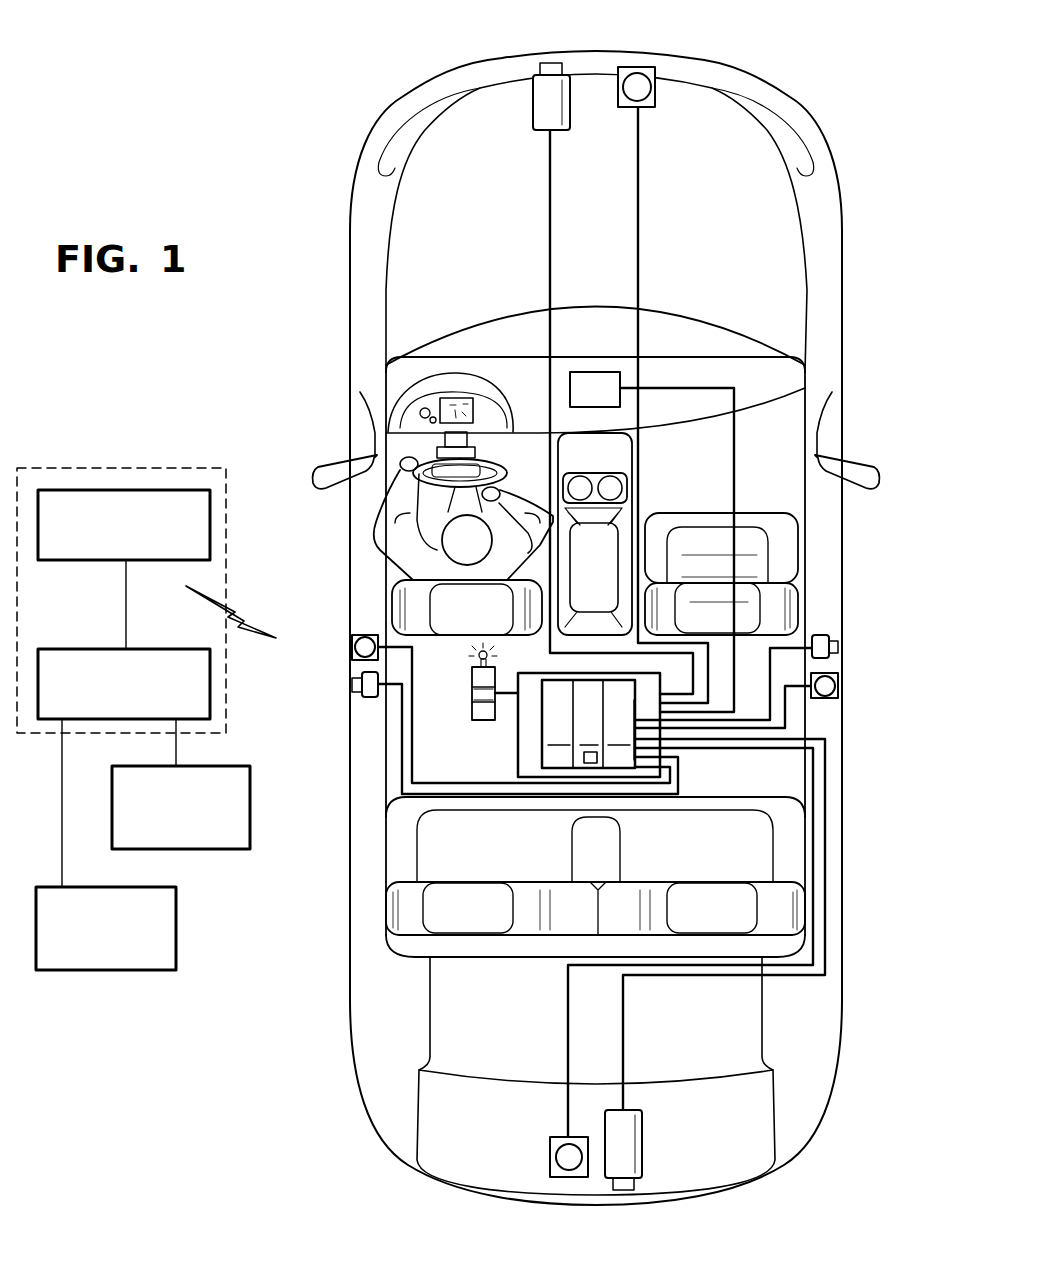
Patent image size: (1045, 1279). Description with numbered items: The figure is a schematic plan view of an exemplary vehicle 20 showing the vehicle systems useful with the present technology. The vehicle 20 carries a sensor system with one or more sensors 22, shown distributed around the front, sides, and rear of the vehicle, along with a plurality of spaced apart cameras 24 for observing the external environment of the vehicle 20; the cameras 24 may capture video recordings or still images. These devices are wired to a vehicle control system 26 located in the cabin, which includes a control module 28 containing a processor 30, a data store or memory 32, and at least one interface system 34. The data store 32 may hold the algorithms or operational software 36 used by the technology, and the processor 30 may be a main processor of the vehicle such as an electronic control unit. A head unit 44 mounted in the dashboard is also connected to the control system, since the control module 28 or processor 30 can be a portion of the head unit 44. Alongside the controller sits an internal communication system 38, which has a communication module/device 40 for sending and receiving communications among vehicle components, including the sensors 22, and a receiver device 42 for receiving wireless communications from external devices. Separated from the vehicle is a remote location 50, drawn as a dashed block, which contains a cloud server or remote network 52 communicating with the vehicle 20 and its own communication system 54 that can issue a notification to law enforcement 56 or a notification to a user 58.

The vehicle 20 is at (867, 318).
The sensor 22 is at (633, 70).
The camera 24 is at (550, 100).
The vehicle control system 26 is at (566, 763).
The control module 28 is at (540, 762).
The processor 30 is at (558, 724).
The data store 32 is at (589, 724).
The interface system 34 is at (620, 730).
The operational software 36 is at (593, 766).
The communication system 38 is at (459, 684).
The communication module/device 40 is at (477, 694).
The receiver device 42 is at (457, 690).
The head unit 44 is at (600, 372).
The remote location 50 is at (153, 683).
The cloud server or remote network 52 is at (212, 514).
The communication system 54 is at (212, 668).
The notification to law enforcement 56 is at (252, 790).
The notification to user 58 is at (178, 900).